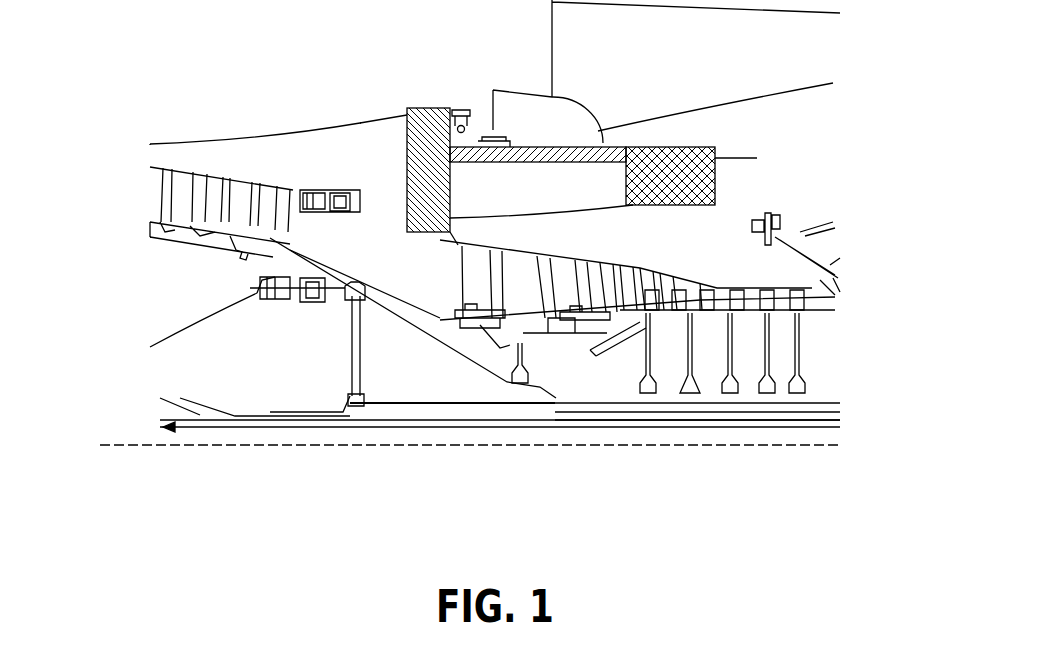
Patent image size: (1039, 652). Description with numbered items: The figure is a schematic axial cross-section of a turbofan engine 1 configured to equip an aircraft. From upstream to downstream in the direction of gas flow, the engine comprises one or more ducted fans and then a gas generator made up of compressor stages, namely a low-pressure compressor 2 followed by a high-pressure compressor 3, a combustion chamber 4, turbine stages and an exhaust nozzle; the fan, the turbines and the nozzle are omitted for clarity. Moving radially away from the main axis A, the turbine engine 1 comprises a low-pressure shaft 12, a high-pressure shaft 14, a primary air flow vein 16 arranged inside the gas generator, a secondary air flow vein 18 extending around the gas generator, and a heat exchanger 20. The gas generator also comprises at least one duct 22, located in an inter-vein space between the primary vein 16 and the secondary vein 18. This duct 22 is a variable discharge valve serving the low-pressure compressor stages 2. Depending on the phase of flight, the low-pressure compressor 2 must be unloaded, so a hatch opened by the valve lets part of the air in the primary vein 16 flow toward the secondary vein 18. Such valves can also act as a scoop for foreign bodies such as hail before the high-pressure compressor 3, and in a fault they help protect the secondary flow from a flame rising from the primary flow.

The turbofan engine 1 is at (138, 98).
The low-pressure compressor 2 is at (223, 202).
The high-pressure compressor 3 is at (585, 340).
The combustion chamber 4 is at (892, 283).
The low-pressure shaft 12 is at (690, 428).
The high-pressure shaft 14 is at (556, 402).
The primary air flow vein 16 is at (148, 206).
The secondary air flow vein 18 is at (273, 103).
The heat exchanger 20 is at (665, 147).
The duct 22 is at (378, 214).
The main axis A is at (140, 442).